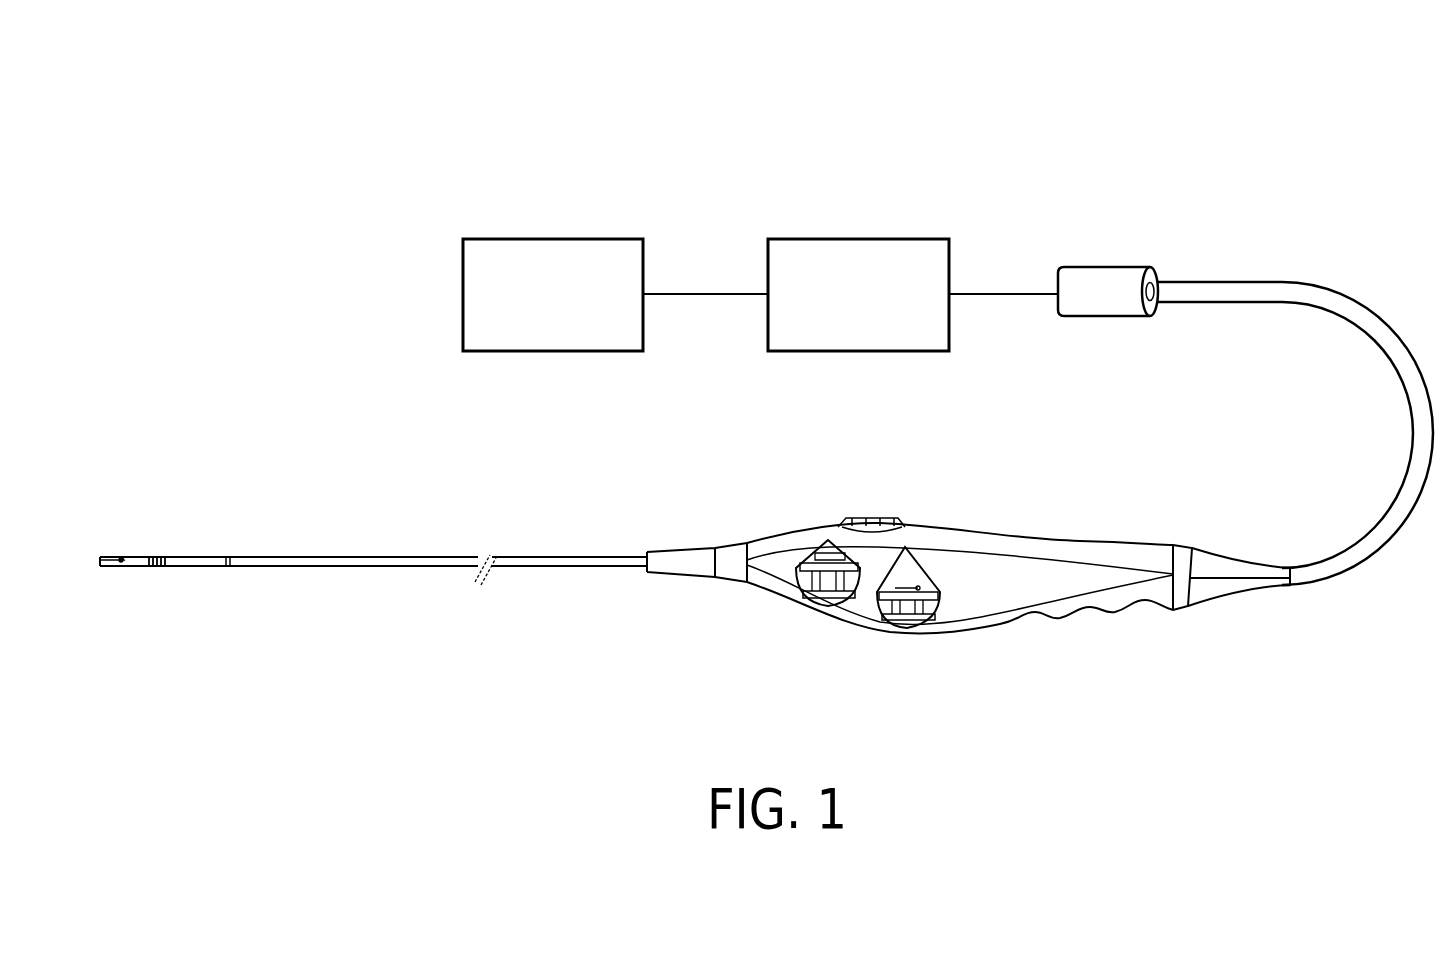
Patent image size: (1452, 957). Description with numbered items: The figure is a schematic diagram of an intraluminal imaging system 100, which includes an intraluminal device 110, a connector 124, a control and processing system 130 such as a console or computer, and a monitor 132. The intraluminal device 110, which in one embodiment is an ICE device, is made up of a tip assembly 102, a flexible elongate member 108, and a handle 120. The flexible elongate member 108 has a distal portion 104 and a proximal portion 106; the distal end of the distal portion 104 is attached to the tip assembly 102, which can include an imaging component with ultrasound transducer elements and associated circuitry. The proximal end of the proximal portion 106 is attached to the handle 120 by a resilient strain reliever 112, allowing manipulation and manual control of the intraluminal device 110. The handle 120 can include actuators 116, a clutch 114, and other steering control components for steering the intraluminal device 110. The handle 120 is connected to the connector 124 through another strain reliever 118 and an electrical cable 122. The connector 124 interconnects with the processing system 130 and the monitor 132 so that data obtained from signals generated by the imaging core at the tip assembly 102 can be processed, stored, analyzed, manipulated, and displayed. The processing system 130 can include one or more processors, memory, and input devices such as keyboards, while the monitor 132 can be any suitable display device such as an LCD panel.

The intraluminal imaging system 100 is at (1170, 167).
The tip assembly 102 is at (137, 557).
The distal portion 104 is at (202, 557).
The proximal portion 106 is at (396, 557).
The flexible elongate member 108 is at (148, 597).
The intraluminal device 110 is at (582, 497).
The resilient strain reliever 112 is at (673, 553).
The clutch 114 is at (872, 518).
The actuators 116 is at (876, 596).
The strain reliever 118 is at (1240, 588).
The handle 120 is at (1143, 543).
The electrical cable 122 is at (1338, 558).
The connector 124 is at (1108, 266).
The control and processing system 130 is at (853, 238).
The monitor 132 is at (553, 238).